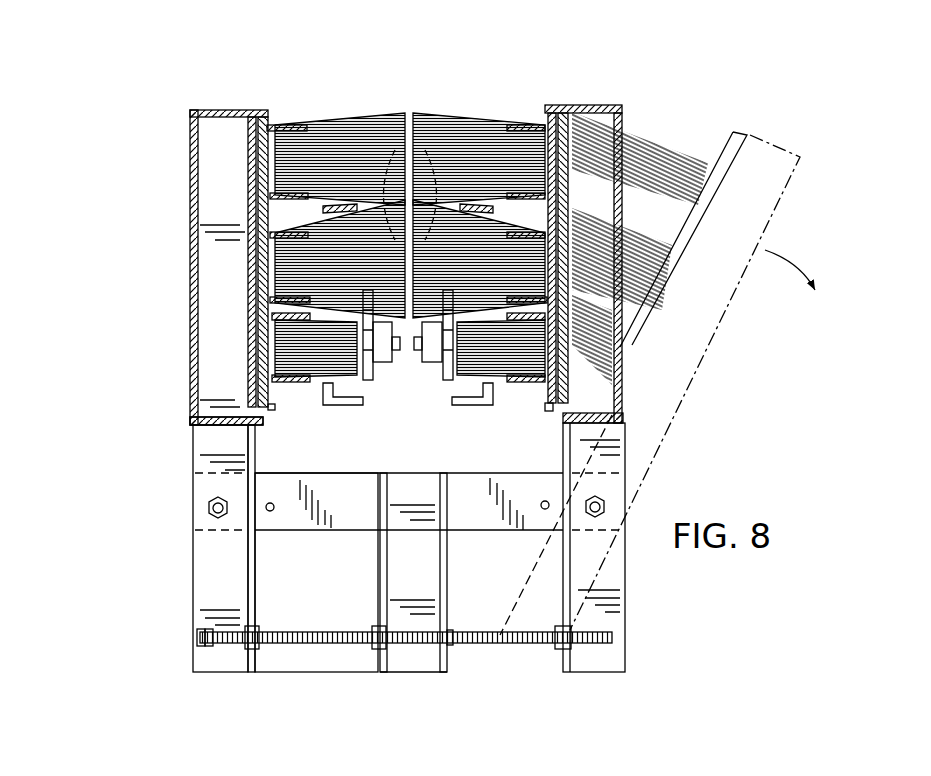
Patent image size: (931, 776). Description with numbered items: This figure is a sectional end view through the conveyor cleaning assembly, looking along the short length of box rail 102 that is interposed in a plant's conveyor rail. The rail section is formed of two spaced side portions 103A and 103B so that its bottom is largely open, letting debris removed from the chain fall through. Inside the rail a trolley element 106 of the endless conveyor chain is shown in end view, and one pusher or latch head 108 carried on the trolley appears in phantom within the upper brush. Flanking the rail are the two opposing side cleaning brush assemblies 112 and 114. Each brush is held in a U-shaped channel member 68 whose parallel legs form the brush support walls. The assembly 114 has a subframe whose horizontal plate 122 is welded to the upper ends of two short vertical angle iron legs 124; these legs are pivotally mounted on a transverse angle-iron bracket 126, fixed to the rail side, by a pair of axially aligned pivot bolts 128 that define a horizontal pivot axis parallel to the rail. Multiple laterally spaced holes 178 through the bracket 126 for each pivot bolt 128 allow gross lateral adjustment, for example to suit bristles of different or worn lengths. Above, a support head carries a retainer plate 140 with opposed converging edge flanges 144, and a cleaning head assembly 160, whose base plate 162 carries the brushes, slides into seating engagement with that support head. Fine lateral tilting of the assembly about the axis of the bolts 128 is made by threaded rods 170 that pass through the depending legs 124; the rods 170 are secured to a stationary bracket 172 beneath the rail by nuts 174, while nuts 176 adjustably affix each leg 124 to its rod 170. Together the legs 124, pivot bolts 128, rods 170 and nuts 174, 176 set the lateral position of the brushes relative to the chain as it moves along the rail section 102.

The U-shaped channel member 68 is at (323, 118).
The box rail 102 is at (463, 412).
The side portion 103A is at (472, 405).
The side portion 103B is at (338, 402).
The trolley element 106 is at (427, 373).
The head 108 is at (495, 120).
The side cleaning brush assembly 112 is at (618, 100).
The side cleaning brush assembly 114 is at (188, 108).
The horizontal plate 122 is at (212, 425).
The vertical angle iron leg 124 is at (200, 615).
The transverse angle-iron bracket 126 is at (296, 532).
The pivot bolt 128 is at (210, 512).
The retainer plate 140 is at (247, 105).
The edge flange 144 is at (263, 113).
The cleaning head assembly 160 is at (353, 115).
The base plate 162 is at (312, 120).
The threaded rod 170 is at (338, 645).
The stationary bracket 172 is at (425, 672).
The nut 174 is at (395, 627).
The nut 176 is at (250, 652).
The hole 178 is at (243, 505).